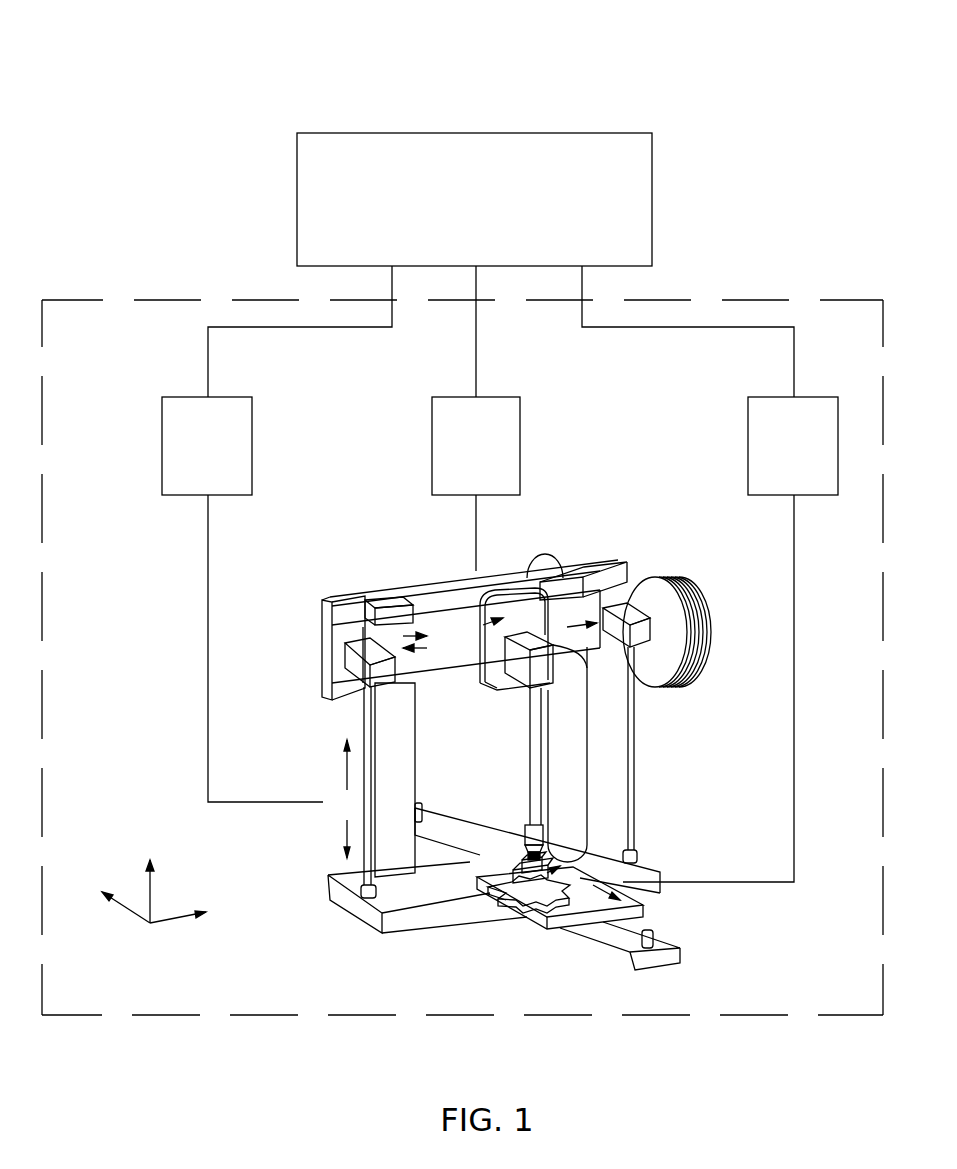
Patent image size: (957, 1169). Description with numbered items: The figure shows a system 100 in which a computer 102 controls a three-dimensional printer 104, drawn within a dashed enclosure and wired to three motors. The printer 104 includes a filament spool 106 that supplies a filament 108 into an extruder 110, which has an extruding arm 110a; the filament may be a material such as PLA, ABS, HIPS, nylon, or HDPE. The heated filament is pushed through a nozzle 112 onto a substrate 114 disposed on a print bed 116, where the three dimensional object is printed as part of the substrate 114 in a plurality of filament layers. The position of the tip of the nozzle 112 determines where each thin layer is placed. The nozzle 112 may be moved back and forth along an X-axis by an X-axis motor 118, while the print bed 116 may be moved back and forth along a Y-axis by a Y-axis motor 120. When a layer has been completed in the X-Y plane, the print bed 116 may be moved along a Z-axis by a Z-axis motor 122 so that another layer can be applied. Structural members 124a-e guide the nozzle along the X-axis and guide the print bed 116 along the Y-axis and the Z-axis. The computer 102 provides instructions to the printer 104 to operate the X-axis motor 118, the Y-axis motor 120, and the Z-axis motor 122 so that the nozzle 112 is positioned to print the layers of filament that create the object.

The system 100 is at (207, 80).
The computer 102 is at (558, 132).
The three-dimensional printer 104 is at (771, 300).
The filament spool 106 is at (684, 580).
The filament 108 is at (546, 553).
The extruder 110 is at (433, 607).
The extruding arm 110a is at (556, 713).
The nozzle 112 is at (523, 832).
The substrate 114 is at (592, 865).
The print bed 116 is at (522, 917).
The X-axis motor 118 is at (495, 397).
The Y-axis motor 120 is at (820, 397).
The Z-axis motor 122 is at (250, 397).
The structural members 124a-e is at (587, 623).